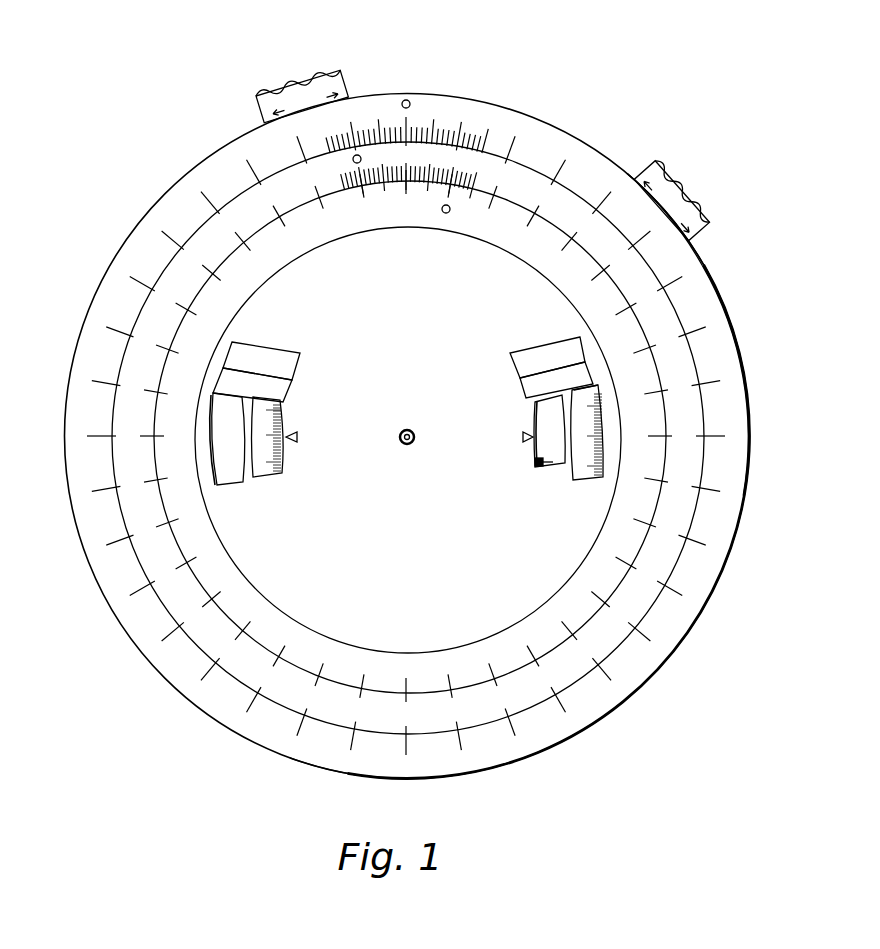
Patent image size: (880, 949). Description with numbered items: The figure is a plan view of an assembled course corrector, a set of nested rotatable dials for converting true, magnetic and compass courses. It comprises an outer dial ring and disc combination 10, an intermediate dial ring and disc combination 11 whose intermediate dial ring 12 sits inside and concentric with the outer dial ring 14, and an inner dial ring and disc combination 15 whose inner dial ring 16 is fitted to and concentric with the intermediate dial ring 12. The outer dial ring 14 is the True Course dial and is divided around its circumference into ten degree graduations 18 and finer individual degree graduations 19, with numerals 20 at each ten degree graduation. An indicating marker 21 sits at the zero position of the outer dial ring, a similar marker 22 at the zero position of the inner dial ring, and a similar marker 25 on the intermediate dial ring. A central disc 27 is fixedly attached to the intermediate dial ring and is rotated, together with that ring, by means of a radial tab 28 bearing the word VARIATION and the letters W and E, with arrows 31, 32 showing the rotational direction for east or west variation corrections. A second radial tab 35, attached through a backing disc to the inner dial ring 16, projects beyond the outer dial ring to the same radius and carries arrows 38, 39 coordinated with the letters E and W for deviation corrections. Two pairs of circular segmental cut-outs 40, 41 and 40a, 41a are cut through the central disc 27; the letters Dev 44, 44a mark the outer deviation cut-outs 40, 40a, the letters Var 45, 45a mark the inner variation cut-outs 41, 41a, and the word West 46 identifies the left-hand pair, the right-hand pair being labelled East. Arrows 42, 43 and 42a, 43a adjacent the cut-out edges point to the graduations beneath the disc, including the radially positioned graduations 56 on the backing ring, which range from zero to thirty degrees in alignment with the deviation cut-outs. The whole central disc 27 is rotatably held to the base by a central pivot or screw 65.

The outer dial ring and disc combination 10 is at (417, 408).
The intermediate dial ring and disc combination 11 is at (718, 305).
The intermediate dial ring 12 is at (708, 352).
The outer dial ring 14 is at (408, 412).
The inner dial ring and disc combination 15 is at (410, 437).
The inner dial ring 16 is at (358, 646).
The 10 degree graduations 18 is at (520, 130).
The intermediate individual degree graduations 19 is at (478, 98).
The numerals 20 is at (694, 264).
The indicating marker 21 is at (408, 99).
The marker 22 is at (445, 214).
The marker 25 is at (358, 164).
The central disc 27 is at (432, 358).
The radial tab 28 is at (293, 83).
The arrow 31 is at (262, 100).
The arrow 32 is at (346, 95).
The radial tab 35 is at (690, 173).
The arrow 38 is at (640, 150).
The arrow 39 is at (700, 232).
The outer radial cut-out 40 is at (245, 484).
The inner radial cut-out 41 is at (283, 470).
The arrow 42 is at (285, 407).
The arrow 43 is at (297, 434).
The letters "Dev" 44 is at (272, 342).
The letters "Var" 45 is at (292, 386).
The word "West" 46 is at (277, 339).
The outer radial cut-out 40a is at (598, 390).
The inner radial cut-out 41a is at (546, 450).
The arrow 42a is at (564, 417).
The arrow 43a is at (523, 437).
The letters "Dev" 44a is at (548, 336).
The letters "Var" 45a is at (524, 388).
The radially positioned graduations 56 is at (574, 482).
The pivot or screw 65 is at (411, 442).